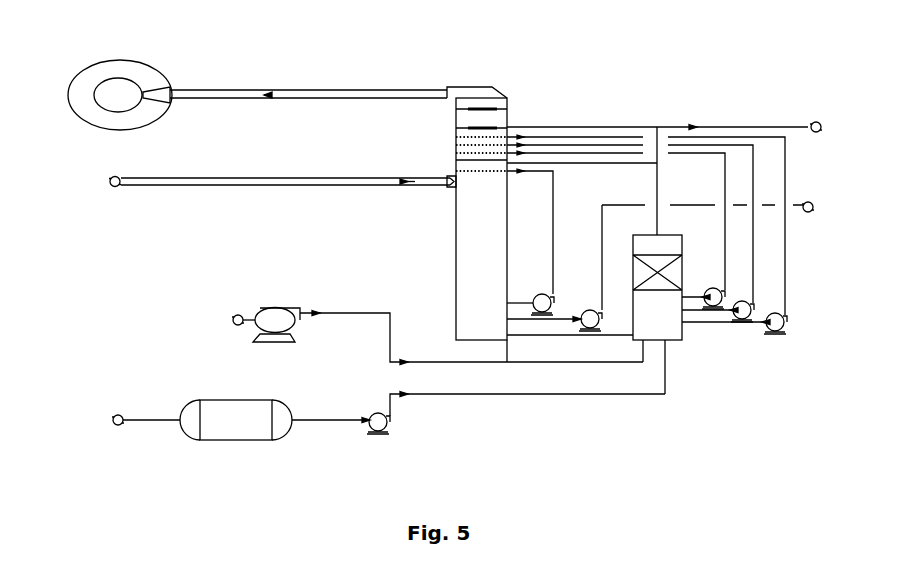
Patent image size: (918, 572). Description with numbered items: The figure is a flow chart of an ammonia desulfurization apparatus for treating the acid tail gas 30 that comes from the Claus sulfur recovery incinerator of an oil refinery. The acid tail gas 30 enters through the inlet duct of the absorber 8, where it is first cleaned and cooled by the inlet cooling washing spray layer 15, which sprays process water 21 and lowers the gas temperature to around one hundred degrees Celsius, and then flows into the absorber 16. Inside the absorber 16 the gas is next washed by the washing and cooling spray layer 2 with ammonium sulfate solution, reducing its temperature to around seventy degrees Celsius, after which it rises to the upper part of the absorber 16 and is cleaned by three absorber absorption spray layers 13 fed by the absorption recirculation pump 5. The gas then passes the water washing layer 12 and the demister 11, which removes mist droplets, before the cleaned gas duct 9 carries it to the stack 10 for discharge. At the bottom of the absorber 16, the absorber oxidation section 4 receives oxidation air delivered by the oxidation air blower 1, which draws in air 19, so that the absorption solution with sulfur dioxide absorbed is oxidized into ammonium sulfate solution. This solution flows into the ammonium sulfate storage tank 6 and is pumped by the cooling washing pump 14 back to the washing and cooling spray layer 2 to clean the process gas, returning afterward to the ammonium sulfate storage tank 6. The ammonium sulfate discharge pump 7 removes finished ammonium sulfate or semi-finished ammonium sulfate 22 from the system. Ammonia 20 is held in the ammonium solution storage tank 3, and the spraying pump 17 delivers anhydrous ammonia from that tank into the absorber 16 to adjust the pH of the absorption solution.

The oxidation air blower 1 is at (272, 320).
The washing and cooling spray layer 2 is at (490, 171).
The ammonium solution storage tank 3 is at (293, 427).
The absorber oxidation section 4 is at (658, 293).
The absorption recirculation pump 5 is at (777, 334).
The ammonium sulfate storage tank 6 is at (498, 330).
The ammonium sulfate discharge pump 7 is at (592, 330).
The inlet duct of the absorber 8 is at (262, 173).
The cleaned gas duct 9 is at (188, 91).
The stack 10 is at (158, 68).
The demister 11 is at (484, 108).
The water washing layer 12 is at (484, 128).
The absorber absorption spray layer 13 is at (488, 152).
The cooling washing pump 14 is at (543, 318).
The inlet cooling washing spray layer 15 is at (450, 176).
The absorber 16 is at (473, 87).
The spraying pump 17 is at (382, 434).
The air 19 is at (224, 334).
The ammonia 20 is at (120, 401).
The process water 21 is at (687, 126).
The finished ammonium sulfate or semi-finished ammonium sulfate 22 is at (719, 243).
The acid tail gas 30 is at (78, 167).